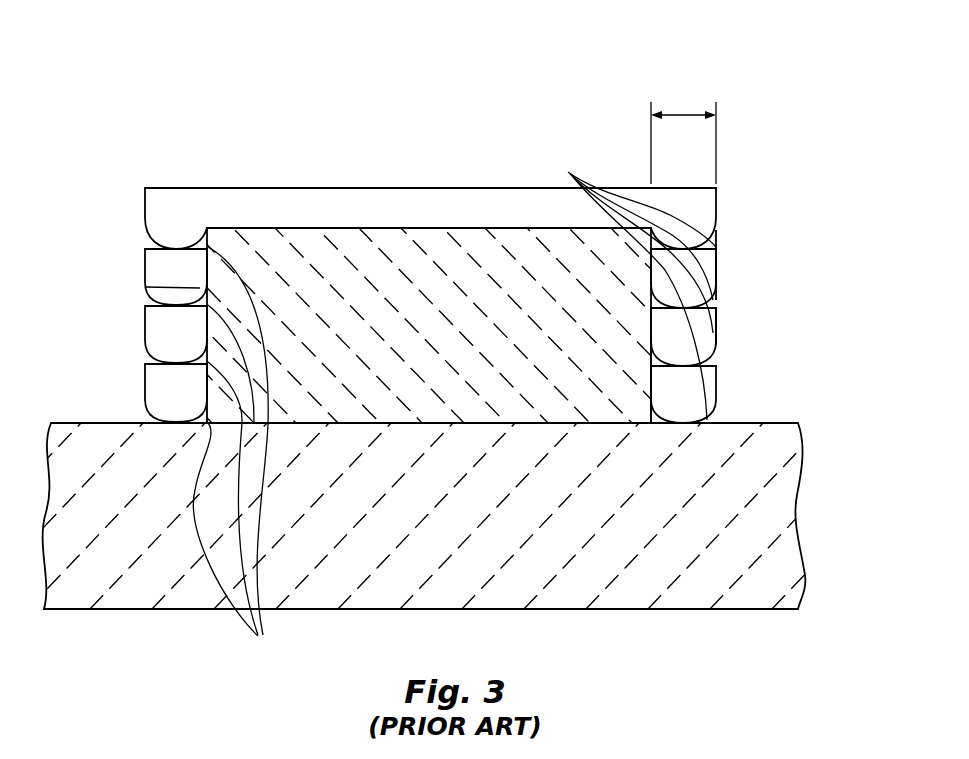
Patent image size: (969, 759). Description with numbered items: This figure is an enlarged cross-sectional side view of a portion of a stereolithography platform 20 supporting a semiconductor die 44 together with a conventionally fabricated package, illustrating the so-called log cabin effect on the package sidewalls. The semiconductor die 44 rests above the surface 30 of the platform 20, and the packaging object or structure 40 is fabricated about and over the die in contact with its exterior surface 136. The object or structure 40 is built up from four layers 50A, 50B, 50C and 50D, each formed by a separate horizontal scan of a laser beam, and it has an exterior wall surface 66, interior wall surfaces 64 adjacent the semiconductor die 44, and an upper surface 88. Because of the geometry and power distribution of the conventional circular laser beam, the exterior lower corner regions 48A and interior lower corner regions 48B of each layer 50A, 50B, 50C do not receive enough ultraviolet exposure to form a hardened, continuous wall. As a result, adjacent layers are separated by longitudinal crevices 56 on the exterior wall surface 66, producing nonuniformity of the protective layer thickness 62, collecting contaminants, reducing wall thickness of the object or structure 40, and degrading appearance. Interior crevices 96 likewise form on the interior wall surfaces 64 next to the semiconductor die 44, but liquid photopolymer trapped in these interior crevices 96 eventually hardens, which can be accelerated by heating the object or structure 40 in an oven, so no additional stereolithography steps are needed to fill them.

The platform 20 is at (337, 541).
The surface of platform 30 is at (779, 423).
The object or structure 40 is at (145, 150).
The semiconductor die 44 is at (415, 339).
The exterior lower corner regions 48A is at (625, 283).
The interior lower corner regions 48B is at (237, 458).
The layer 50A is at (157, 398).
The layer 50B is at (157, 344).
The layer 50C is at (158, 284).
The layer 50D is at (161, 223).
The longitudinal crevices 56 is at (722, 296).
The protective layer thickness 62 is at (683, 113).
The interior wall surfaces 64 is at (145, 287).
The exterior wall surface 66 is at (715, 332).
The upper surface 88 is at (500, 187).
The interior crevices 96 is at (637, 363).
The exterior surface of semiconductor die 136 is at (400, 228).